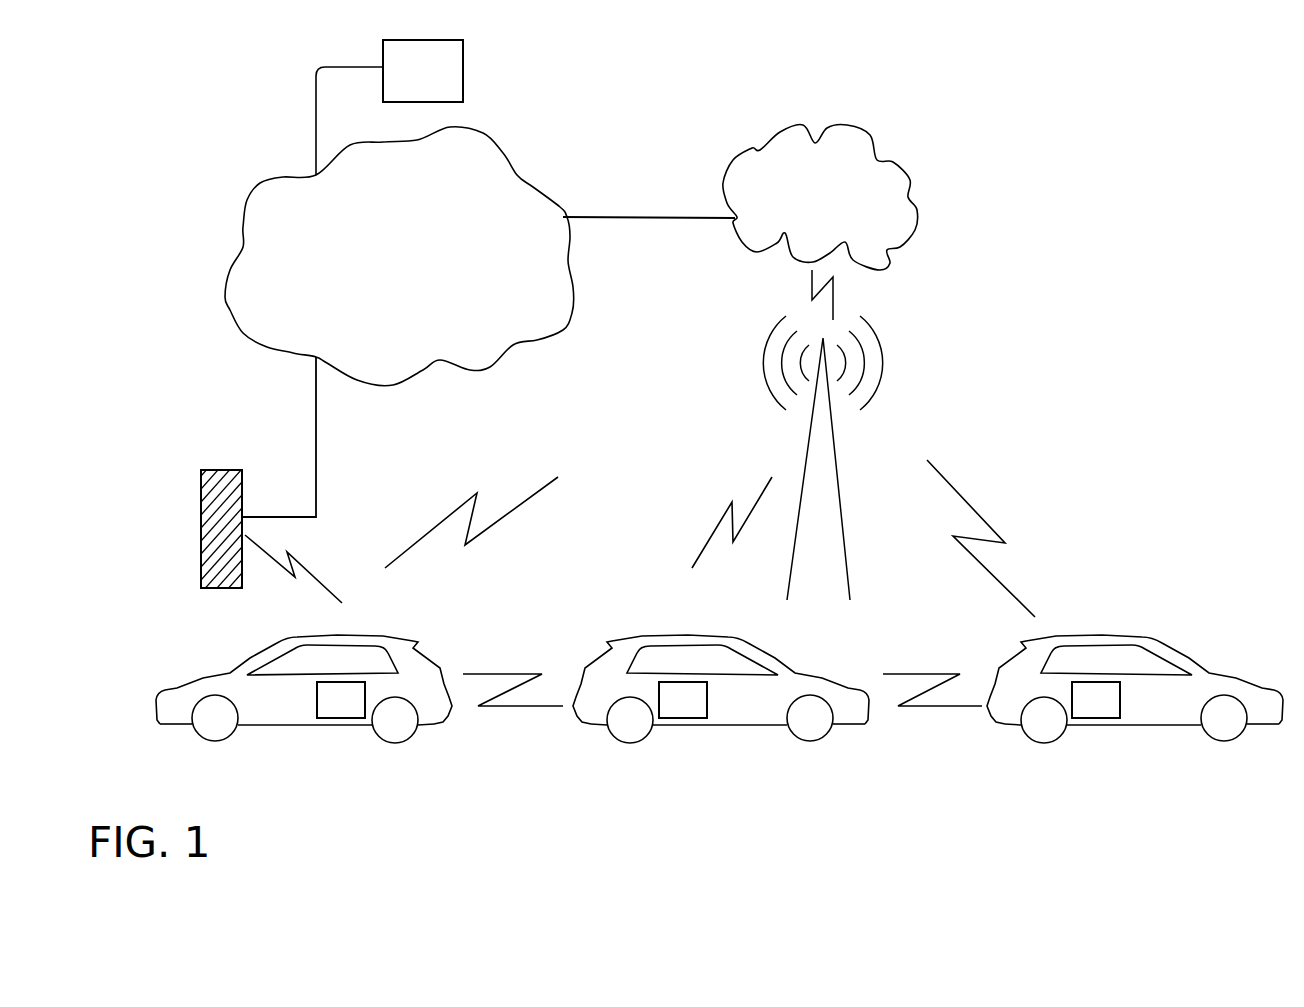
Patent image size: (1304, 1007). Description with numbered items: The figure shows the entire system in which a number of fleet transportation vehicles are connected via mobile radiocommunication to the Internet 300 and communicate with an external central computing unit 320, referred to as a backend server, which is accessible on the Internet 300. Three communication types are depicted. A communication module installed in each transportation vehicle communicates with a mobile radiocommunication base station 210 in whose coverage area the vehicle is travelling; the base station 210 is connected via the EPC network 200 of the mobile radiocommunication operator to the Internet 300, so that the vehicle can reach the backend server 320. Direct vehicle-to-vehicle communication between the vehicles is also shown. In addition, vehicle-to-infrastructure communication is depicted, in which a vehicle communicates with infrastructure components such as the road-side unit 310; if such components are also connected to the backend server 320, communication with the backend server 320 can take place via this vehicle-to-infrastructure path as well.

The EPC network 200 is at (853, 139).
The mobile radiocommunication base station 210 is at (836, 438).
The Internet 300 is at (518, 195).
The road-side unit 310 is at (215, 480).
The external central computing unit 320 is at (446, 73).